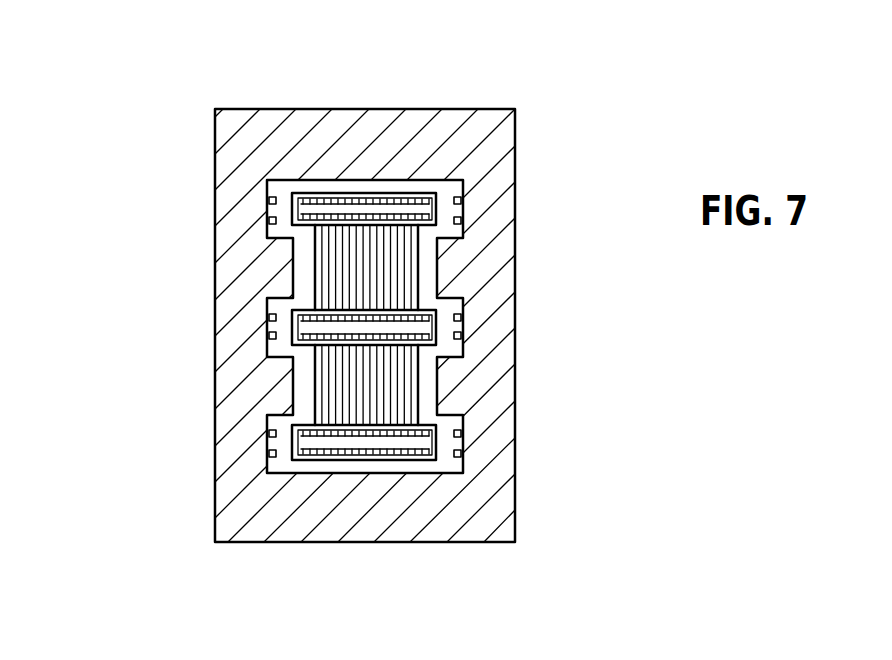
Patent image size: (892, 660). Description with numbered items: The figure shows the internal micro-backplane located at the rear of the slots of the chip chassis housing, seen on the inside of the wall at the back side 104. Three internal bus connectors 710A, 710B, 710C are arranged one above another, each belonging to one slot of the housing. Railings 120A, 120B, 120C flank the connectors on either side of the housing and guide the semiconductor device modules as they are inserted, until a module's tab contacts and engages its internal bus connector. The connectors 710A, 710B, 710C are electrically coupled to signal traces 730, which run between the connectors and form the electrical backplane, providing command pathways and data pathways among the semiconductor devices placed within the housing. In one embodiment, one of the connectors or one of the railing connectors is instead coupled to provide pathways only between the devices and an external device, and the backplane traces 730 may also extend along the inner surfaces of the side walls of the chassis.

The back side 104 is at (407, 88).
The signal traces 730 is at (341, 275).
The internal bus connector 710A is at (425, 195).
The internal bus connector 710B is at (432, 308).
The internal bus connector 710C is at (434, 424).
The railing 120A is at (264, 207).
The railing 120B is at (264, 327).
The railing 120C is at (264, 447).